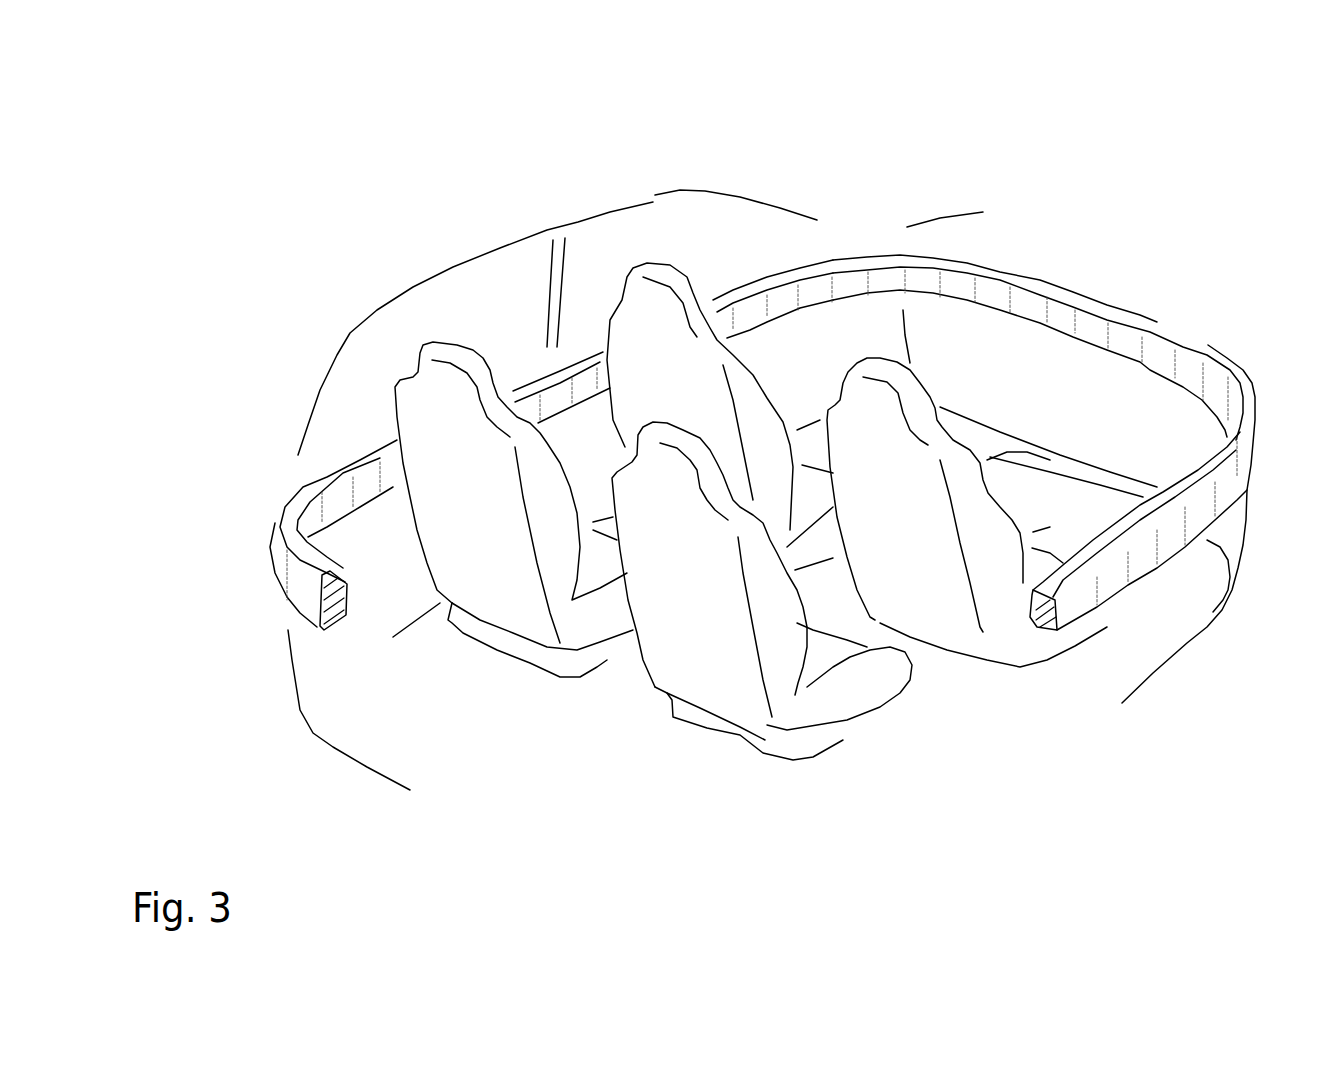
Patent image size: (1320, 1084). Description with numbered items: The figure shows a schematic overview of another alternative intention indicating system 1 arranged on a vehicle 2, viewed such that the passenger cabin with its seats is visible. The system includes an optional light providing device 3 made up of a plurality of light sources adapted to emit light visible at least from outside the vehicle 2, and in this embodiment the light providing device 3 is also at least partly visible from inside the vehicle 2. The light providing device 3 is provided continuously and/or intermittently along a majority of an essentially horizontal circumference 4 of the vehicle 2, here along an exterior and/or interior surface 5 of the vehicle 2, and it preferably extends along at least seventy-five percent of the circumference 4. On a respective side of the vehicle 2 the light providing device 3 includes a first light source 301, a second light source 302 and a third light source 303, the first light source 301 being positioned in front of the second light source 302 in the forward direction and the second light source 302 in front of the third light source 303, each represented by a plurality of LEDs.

The intention indicating system 1 is at (257, 183).
The vehicle 2 is at (1092, 145).
The light providing device 3 is at (255, 573).
The circumference 4 is at (1102, 302).
The exterior and/or interior surface 5 is at (1177, 583).
The first light source 301 is at (783, 302).
The second light source 302 is at (552, 400).
The third light source 303 is at (332, 497).